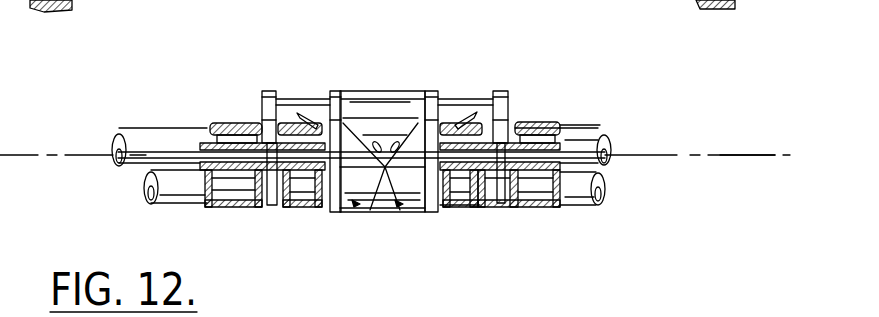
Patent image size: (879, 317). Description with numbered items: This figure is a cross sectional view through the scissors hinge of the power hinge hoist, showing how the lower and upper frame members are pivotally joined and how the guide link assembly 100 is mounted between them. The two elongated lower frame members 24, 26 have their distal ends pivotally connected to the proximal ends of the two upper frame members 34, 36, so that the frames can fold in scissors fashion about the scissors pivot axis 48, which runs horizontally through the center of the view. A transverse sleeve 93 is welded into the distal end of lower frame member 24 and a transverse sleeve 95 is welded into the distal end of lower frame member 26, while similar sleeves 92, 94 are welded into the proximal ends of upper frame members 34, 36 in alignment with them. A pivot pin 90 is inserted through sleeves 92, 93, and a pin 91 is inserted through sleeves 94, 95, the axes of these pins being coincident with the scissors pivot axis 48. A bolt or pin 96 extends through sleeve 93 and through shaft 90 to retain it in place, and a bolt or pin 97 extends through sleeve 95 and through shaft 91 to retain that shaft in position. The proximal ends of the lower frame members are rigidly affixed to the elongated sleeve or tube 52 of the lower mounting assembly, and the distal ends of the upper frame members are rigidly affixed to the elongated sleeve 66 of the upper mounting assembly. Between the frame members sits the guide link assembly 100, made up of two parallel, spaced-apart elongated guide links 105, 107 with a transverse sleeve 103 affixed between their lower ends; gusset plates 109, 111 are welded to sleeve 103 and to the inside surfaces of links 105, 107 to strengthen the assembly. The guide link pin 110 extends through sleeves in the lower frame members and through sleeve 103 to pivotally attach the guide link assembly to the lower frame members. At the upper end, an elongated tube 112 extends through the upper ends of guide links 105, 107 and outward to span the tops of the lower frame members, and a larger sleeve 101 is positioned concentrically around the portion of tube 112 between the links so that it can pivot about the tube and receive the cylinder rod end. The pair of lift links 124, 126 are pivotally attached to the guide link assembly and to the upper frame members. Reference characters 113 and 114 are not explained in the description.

The lower frame member 24 is at (300, 212).
The lower frame member 26 is at (477, 210).
The upper frame member 34 is at (230, 207).
The upper frame member 36 is at (552, 210).
The scissors pivot axis 48 is at (727, 155).
The elongated sleeve or tube 52 is at (593, 212).
The elongated sleeve 66 is at (612, 130).
The pivot pin 90 is at (205, 146).
The pin 91 is at (595, 165).
The sleeve 92 is at (222, 122).
The transverse sleeve 93 is at (262, 130).
The sleeve 94 is at (555, 124).
The transverse sleeve 95 is at (478, 115).
The bolt or pin 96 is at (262, 120).
The bolt or pin 97 is at (530, 118).
The guide link assembly 100 is at (357, 203).
The large sleeve 101 is at (360, 92).
The transverse sleeve 103 is at (418, 205).
The guide link 105 is at (330, 92).
The guide link 107 is at (430, 92).
The gusset plate 109 is at (375, 212).
The guide link pin 110 is at (443, 207).
The gusset plate 111 is at (408, 203).
The elongated tube 112 is at (307, 112).
The left post 113 is at (266, 110).
The right post 114 is at (487, 112).
The lift link 124 is at (265, 92).
The lift link 126 is at (500, 95).